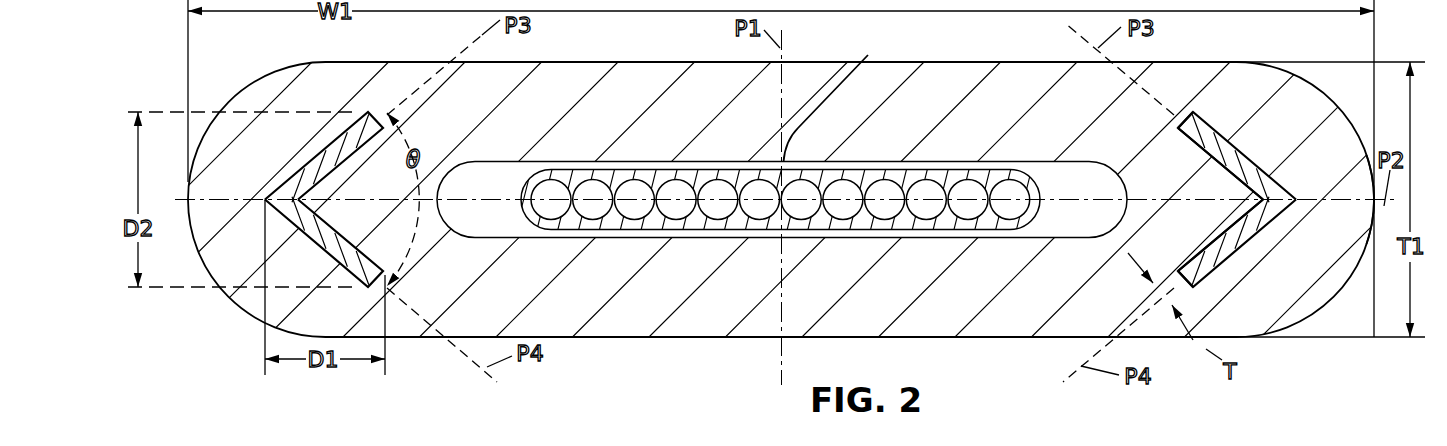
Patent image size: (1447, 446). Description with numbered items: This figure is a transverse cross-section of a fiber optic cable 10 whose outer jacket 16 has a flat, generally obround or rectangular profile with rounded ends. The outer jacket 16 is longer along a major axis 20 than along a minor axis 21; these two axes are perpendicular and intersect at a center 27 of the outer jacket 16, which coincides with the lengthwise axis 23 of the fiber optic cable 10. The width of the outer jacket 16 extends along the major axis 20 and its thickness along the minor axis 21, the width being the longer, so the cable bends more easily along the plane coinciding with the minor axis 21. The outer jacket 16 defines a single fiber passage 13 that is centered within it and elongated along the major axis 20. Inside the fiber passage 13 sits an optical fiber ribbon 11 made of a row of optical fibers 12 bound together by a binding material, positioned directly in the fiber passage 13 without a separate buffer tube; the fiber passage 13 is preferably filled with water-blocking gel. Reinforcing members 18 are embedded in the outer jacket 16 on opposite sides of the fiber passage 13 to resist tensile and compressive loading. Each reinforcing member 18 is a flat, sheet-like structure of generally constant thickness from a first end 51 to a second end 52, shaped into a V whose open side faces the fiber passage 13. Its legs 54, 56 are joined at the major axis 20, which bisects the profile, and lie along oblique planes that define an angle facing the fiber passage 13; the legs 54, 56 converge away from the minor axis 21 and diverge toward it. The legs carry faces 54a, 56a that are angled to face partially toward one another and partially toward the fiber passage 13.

The fiber optic cable 10 is at (723, 224).
The optical fiber ribbon 11 is at (910, 224).
The optical fibers 12 is at (672, 206).
The fiber passage 13 is at (494, 176).
The outer jacket 16 is at (630, 338).
The reinforcing members 18 is at (767, 191).
The major axis 20 is at (1390, 206).
The minor axis 21 is at (783, 80).
The lengthwise axis 23 is at (854, 97).
The center 27 is at (854, 97).
The first end 51 is at (1181, 119).
The second end 52 is at (1194, 289).
The leg 54 is at (328, 157).
The face 54a is at (1179, 139).
The leg 56 is at (313, 231).
The face 56a is at (1224, 239).